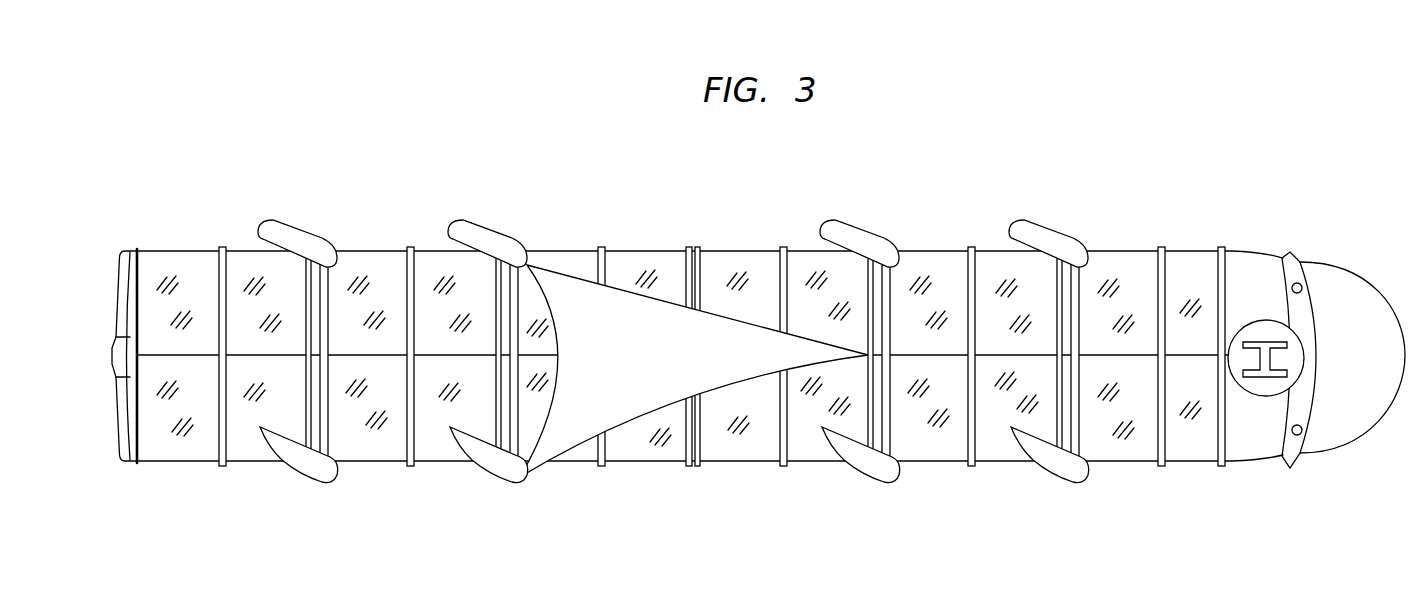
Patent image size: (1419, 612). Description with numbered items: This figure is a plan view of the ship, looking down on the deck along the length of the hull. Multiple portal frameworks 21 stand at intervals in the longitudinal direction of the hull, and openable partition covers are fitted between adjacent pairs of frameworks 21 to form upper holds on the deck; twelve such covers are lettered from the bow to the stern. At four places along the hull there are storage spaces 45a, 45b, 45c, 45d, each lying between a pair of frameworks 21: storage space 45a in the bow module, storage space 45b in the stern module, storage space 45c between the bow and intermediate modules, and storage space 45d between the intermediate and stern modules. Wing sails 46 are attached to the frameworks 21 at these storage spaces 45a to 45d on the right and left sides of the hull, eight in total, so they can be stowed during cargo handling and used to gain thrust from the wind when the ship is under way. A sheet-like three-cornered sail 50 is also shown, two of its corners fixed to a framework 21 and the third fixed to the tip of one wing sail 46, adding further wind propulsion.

The portal framework 21 is at (135, 298).
The wing sail 46 is at (290, 232).
The storage space 45a is at (1069, 283).
The storage space 45b is at (318, 283).
The storage space 45c is at (880, 283).
The storage space 45d is at (508, 283).
The three-cornered sail 50 is at (667, 347).